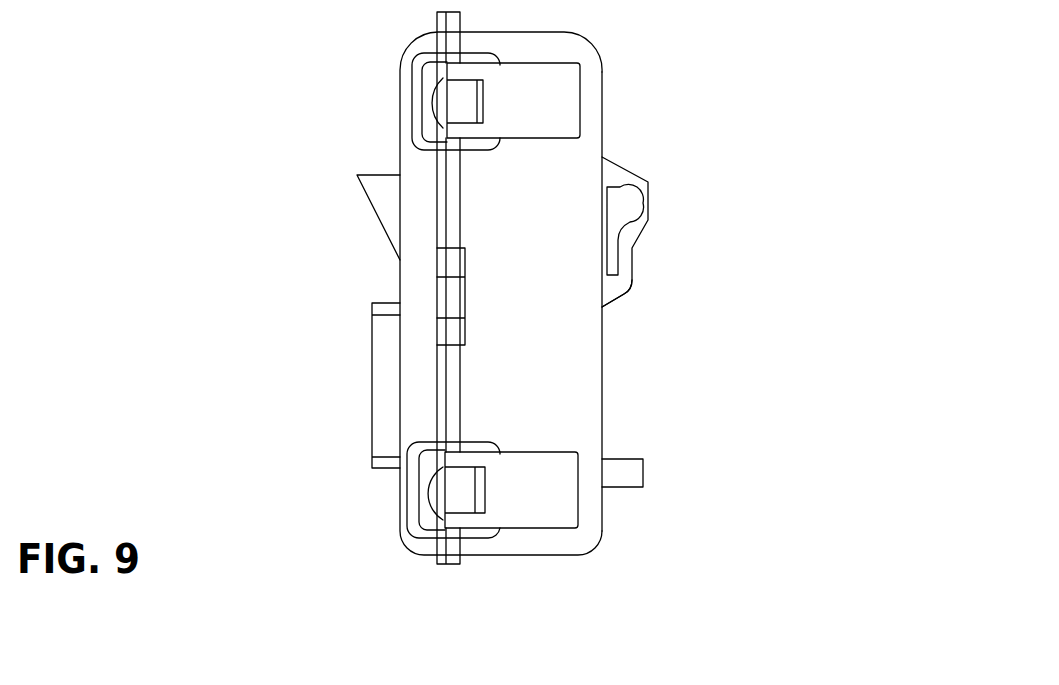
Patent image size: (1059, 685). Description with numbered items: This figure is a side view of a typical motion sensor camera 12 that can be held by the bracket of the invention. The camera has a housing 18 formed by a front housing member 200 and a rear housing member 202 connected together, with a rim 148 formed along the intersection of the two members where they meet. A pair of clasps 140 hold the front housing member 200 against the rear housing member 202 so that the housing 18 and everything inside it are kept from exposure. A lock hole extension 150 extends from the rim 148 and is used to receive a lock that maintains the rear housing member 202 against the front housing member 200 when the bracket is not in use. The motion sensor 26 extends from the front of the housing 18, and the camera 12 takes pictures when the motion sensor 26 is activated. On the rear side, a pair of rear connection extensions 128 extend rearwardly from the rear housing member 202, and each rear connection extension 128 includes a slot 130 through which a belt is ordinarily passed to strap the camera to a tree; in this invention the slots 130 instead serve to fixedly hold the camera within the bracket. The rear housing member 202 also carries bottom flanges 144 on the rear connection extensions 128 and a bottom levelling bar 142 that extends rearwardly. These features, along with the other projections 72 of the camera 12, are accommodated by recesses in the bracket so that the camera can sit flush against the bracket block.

The motion sensor camera 12 is at (680, 88).
The housing 18 is at (605, 51).
The motion sensor 26 is at (372, 398).
The projections 72 is at (553, 120).
The rear connection extensions 128 is at (650, 188).
The slot 130 is at (627, 208).
The clasps 140 is at (514, 146).
The bottom levelling bar 142 is at (640, 492).
The bottom flanges 144 is at (612, 292).
The rim 148 is at (448, 222).
The lock hole extension 150 is at (450, 297).
The front housing member 200 is at (398, 81).
The rear housing member 202 is at (612, 92).